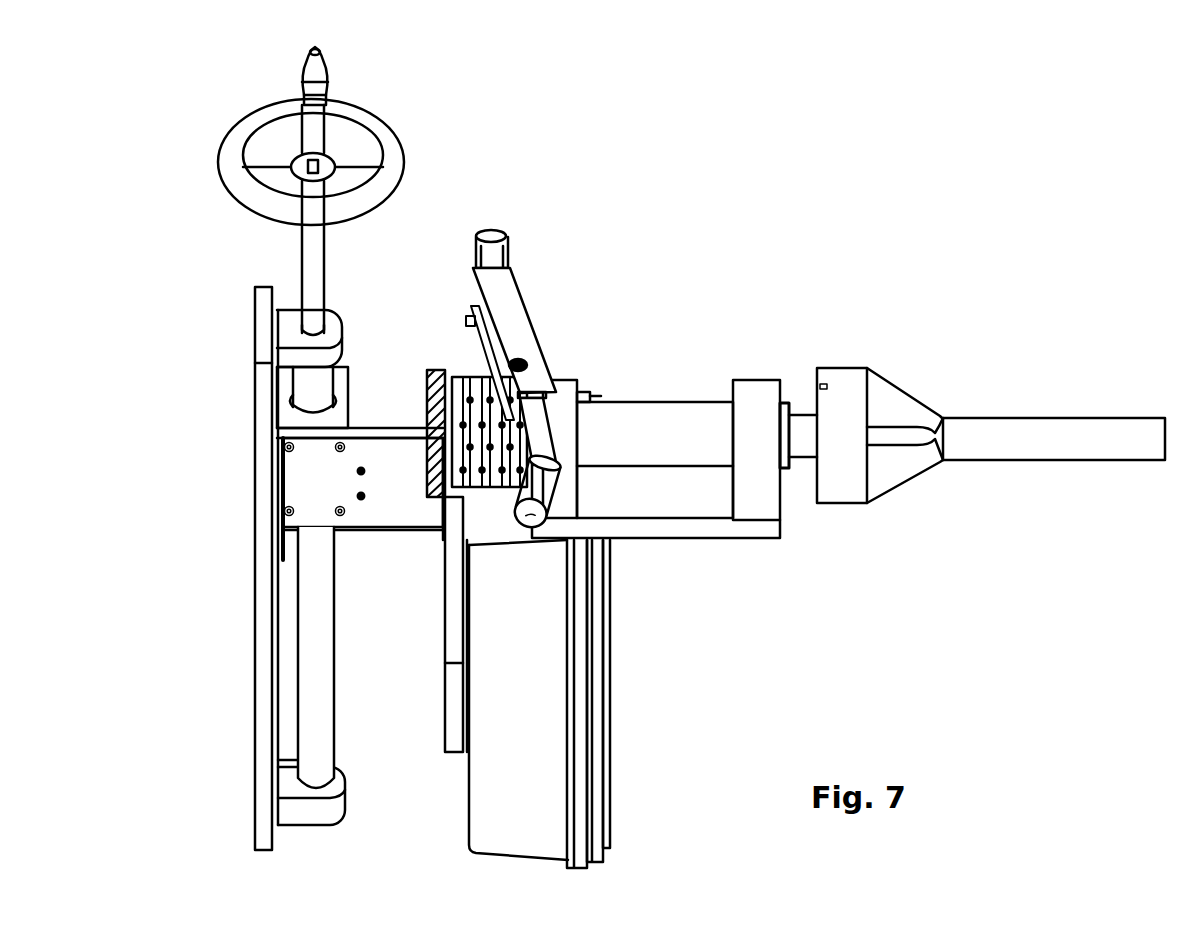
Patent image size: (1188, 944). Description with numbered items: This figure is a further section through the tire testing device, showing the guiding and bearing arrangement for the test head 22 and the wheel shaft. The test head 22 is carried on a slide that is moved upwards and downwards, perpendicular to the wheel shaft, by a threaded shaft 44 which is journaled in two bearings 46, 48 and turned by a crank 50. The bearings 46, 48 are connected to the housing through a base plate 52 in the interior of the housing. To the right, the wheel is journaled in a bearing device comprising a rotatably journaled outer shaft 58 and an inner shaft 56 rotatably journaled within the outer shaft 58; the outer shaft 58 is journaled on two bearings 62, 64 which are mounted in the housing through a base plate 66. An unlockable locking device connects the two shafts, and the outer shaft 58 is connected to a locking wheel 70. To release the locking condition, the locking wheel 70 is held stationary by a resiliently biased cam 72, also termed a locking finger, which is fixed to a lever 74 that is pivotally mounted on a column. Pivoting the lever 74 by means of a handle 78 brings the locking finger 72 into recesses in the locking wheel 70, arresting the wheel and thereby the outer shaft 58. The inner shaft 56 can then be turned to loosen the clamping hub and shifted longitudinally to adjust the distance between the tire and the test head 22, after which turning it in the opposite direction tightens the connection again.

The test head 22 is at (508, 838).
The threaded shaft 44 is at (317, 392).
The bearing 46 is at (323, 322).
The bearing 48 is at (318, 812).
The crank 50 is at (327, 63).
The base plate 52 is at (268, 703).
The inner shaft 56 is at (1024, 432).
The outer shaft 58 is at (667, 403).
The bearing 62 is at (552, 380).
The bearing 64 is at (752, 395).
The base plate 66 is at (686, 526).
The locking wheel 70 is at (427, 408).
The resiliently biased cam 72 is at (465, 327).
The lever 74 is at (507, 310).
The handle 78 is at (560, 517).